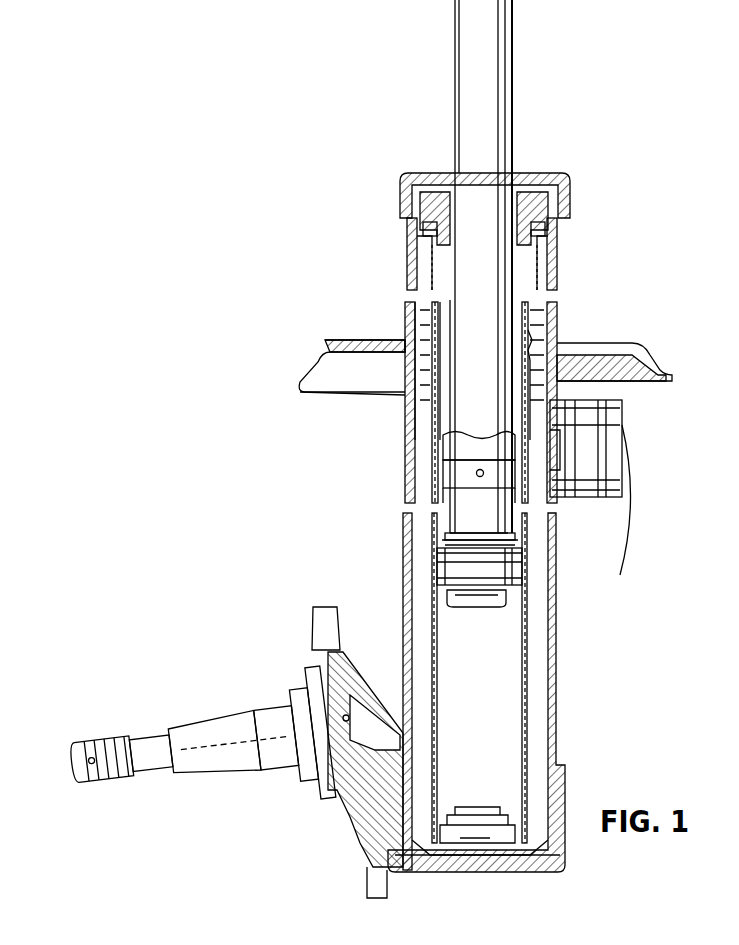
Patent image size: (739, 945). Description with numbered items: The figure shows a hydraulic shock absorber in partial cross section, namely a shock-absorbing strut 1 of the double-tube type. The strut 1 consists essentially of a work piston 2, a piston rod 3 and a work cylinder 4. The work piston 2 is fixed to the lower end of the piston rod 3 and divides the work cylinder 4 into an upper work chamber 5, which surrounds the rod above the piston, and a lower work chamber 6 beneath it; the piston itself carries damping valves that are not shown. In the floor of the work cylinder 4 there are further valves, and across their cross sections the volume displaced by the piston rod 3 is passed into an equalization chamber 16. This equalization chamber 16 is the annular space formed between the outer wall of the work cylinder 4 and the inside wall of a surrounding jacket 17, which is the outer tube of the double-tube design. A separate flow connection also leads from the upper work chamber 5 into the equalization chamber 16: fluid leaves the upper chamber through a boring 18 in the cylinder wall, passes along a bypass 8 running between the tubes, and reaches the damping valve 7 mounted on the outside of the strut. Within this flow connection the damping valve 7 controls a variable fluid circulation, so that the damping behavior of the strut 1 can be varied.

The shock-absorbing strut 1 is at (618, 657).
The work piston 2 is at (458, 574).
The piston rod 3 is at (493, 40).
The work cylinder 4 is at (527, 600).
The upper work chamber 5 is at (440, 524).
The lower work chamber 6 is at (455, 773).
The damping valve 7 is at (622, 416).
The bypass 8 is at (534, 350).
The equalization chamber 16 is at (420, 598).
The jacket 17 is at (405, 473).
The boring 18 is at (534, 330).